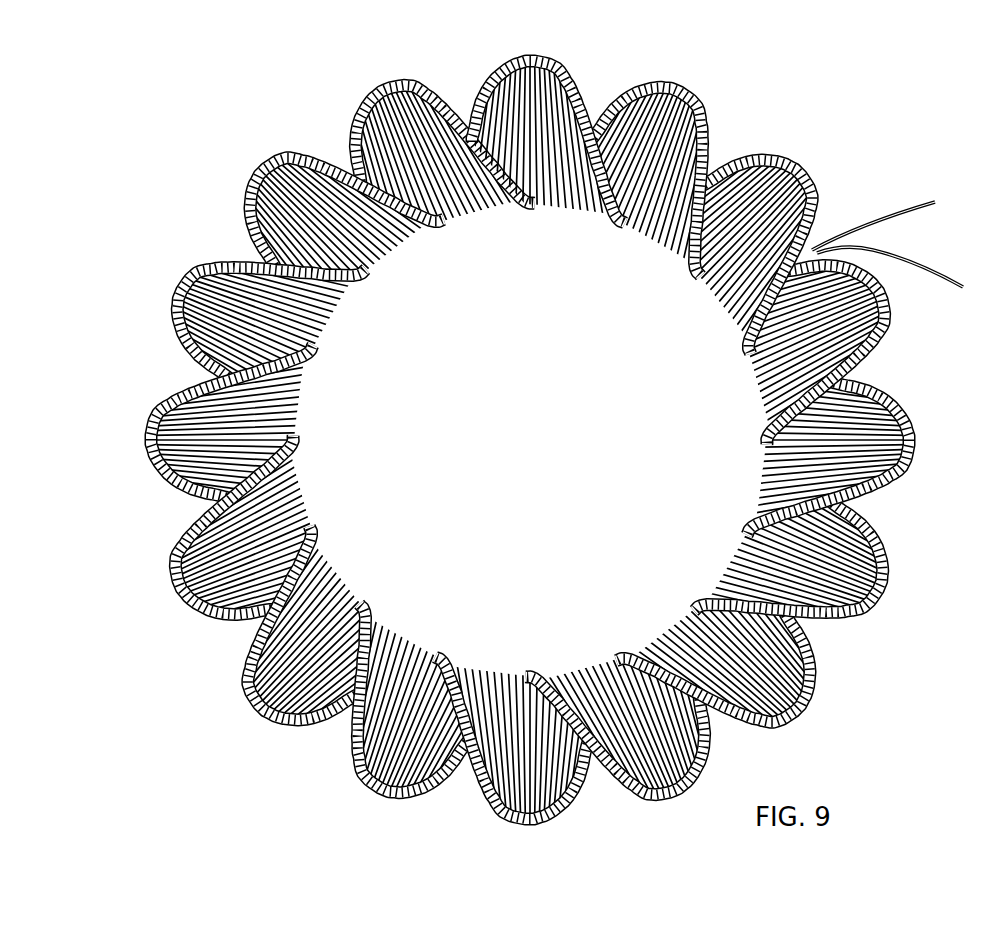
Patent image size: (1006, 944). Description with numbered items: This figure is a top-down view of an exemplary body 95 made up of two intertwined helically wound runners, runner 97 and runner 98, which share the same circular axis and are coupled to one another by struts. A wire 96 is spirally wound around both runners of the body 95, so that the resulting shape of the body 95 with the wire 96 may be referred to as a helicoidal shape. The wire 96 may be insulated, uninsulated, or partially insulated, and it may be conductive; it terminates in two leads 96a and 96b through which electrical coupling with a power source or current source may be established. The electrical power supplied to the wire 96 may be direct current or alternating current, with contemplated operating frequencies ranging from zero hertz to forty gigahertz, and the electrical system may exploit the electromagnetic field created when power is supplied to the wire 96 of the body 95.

The body 95 is at (550, 440).
The wire 96 is at (809, 169).
The lead 96a is at (913, 204).
The lead 96b is at (954, 284).
The runner 97 is at (171, 590).
The runner 98 is at (151, 473).